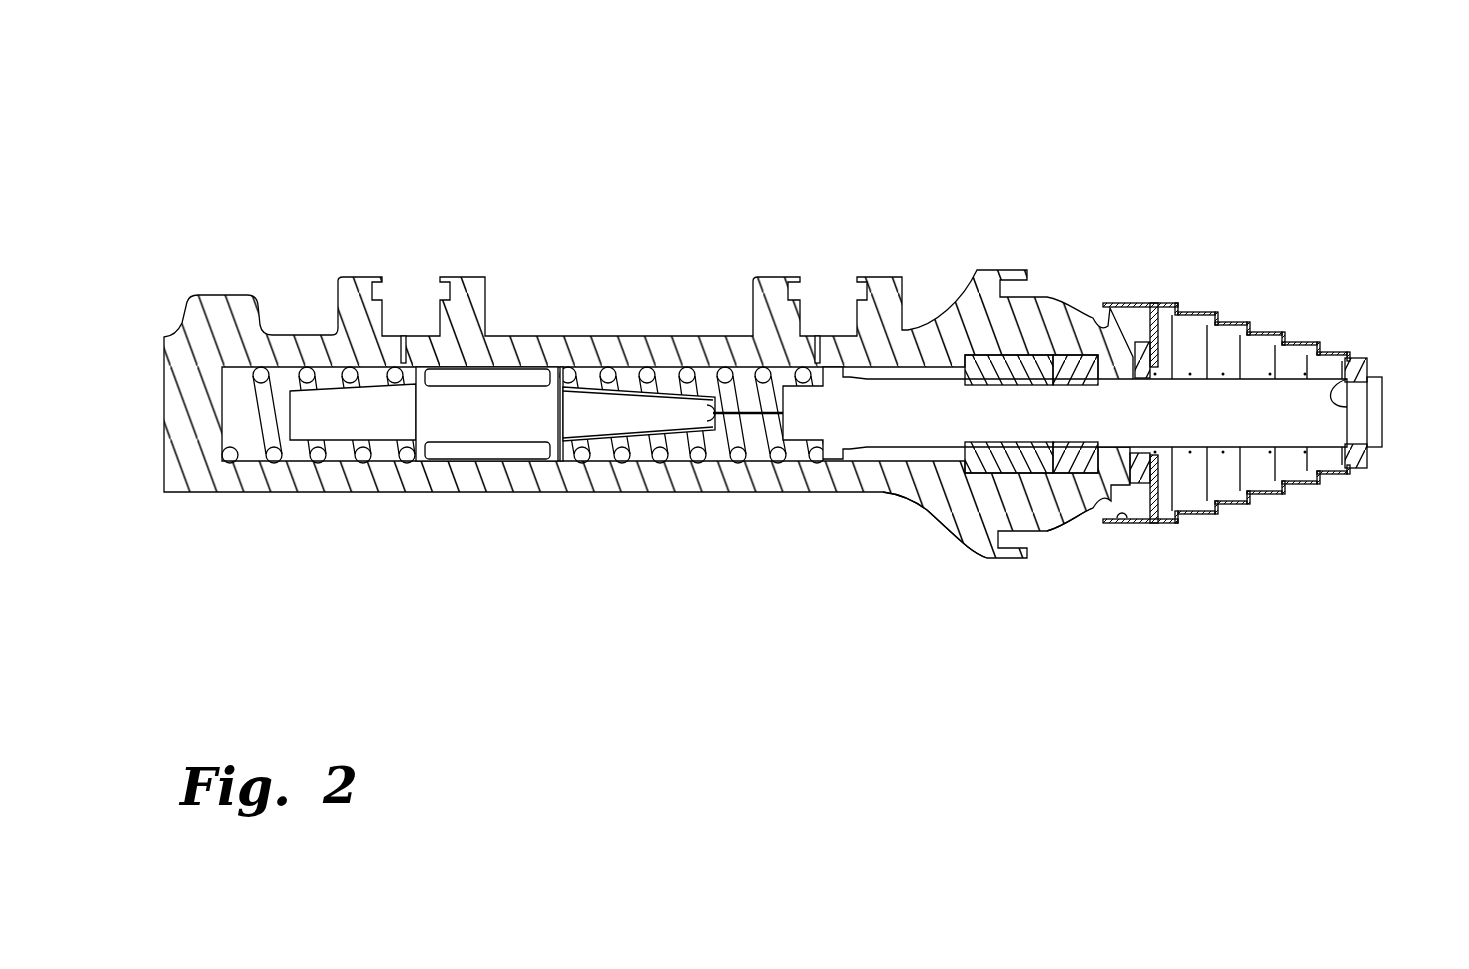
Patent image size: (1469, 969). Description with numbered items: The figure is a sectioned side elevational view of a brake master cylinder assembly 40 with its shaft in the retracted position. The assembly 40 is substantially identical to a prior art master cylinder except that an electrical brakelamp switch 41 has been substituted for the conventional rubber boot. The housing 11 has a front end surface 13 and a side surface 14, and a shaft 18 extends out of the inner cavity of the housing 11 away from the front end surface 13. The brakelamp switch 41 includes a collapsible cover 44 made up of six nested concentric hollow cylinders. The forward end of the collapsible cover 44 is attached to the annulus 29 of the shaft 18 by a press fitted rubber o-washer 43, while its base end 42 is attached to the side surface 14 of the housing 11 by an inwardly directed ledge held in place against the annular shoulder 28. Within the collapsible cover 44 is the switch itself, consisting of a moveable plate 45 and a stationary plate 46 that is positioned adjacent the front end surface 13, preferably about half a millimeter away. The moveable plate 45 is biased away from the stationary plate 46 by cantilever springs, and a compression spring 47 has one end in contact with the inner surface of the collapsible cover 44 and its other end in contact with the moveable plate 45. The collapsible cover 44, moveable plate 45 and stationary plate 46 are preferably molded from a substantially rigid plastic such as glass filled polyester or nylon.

The housing 11 is at (717, 492).
The front end surface 13 is at (1147, 302).
The side surface 14 is at (928, 513).
The shaft 18 is at (1058, 518).
The annular shoulder 28 is at (1107, 312).
The annulus 29 is at (1365, 363).
The brake master cylinder assembly 40 is at (398, 146).
The electrical brakelamp switch 41 is at (1290, 318).
The base end 42 is at (1130, 523).
The rubber o-washer 43 is at (1362, 442).
The collapsible cover 44 is at (1273, 493).
The moveable plate 45 is at (1173, 507).
The stationary plate 46 is at (1152, 482).
The compression spring 47 is at (1223, 468).